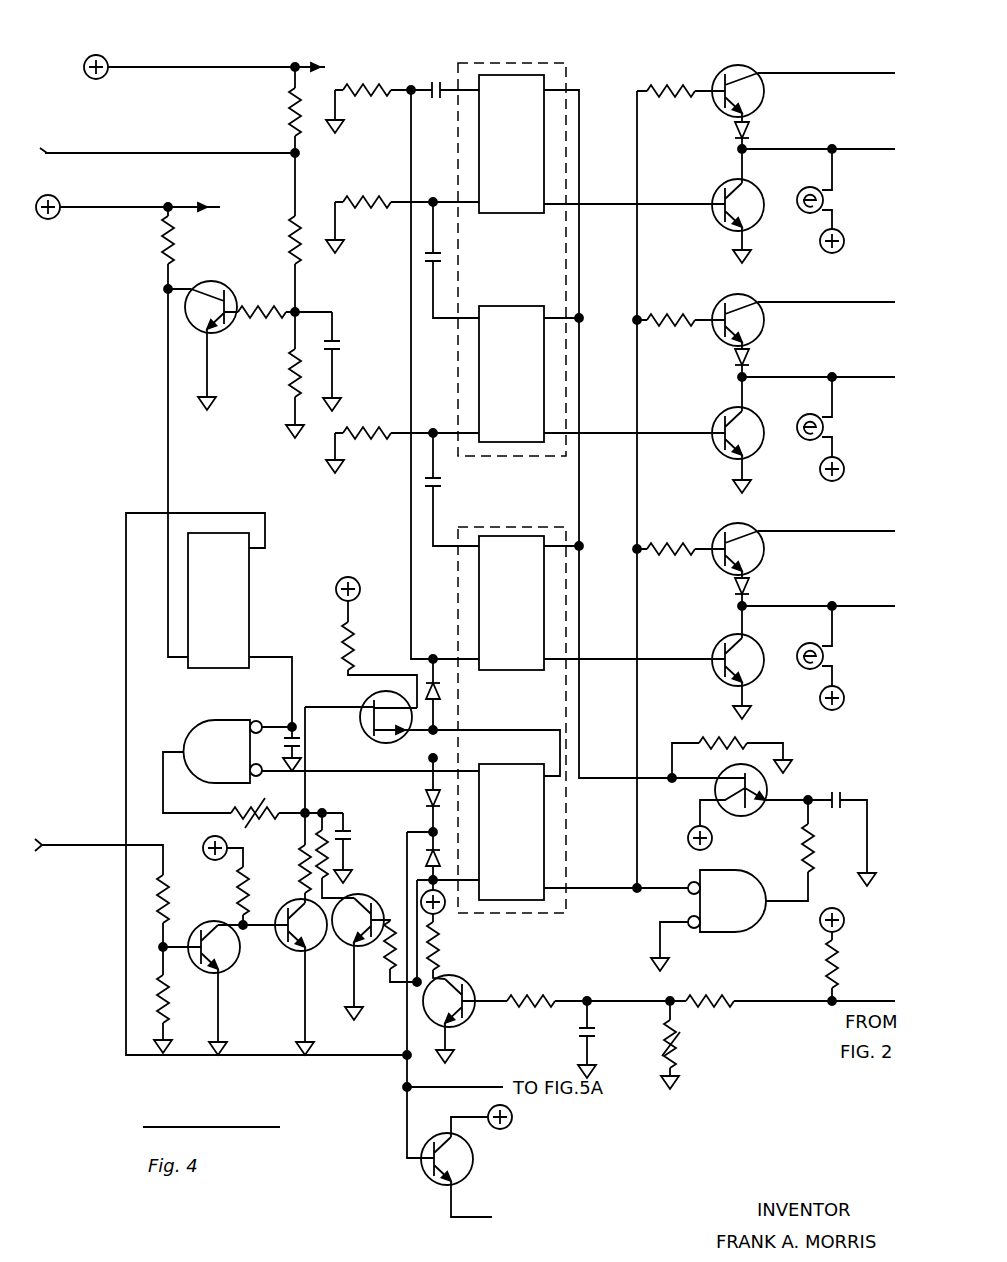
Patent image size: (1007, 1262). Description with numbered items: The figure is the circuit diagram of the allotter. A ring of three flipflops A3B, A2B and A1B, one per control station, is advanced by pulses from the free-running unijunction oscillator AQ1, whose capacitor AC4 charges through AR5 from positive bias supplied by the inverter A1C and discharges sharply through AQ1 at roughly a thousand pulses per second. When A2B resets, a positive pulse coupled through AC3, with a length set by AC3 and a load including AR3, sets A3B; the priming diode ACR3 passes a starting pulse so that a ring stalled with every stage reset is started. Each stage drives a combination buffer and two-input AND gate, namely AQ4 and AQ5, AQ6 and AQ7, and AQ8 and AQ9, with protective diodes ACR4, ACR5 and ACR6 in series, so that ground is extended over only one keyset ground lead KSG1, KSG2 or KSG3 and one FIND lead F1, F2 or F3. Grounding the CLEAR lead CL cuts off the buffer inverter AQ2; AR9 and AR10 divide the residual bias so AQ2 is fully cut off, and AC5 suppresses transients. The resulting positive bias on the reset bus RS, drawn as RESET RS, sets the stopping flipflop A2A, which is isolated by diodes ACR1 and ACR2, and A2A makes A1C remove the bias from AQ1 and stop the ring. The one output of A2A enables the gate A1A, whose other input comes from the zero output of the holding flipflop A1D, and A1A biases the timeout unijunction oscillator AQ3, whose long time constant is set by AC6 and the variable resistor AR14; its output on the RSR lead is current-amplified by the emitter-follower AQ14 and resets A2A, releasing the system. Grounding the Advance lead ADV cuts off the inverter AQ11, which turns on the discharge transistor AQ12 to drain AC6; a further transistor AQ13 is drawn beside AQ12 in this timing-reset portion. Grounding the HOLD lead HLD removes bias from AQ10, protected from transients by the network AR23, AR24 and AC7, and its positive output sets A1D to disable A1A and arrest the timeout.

The unijunction oscillator AQ1 is at (753, 770).
The buffer inverter transistor AQ2 is at (464, 1016).
The unijunction oscillator AQ3 is at (378, 693).
The gate transistor AQ4 is at (734, 67).
The buffer transistor AQ5 is at (745, 183).
The gating transistor AQ6 is at (740, 295).
The gating transistor AQ7 is at (745, 411).
The gating transistor AQ8 is at (740, 525).
The gating transistor AQ9 is at (745, 640).
The hold transistor AQ10 is at (198, 284).
The inverting transistor AQ11 is at (192, 966).
The timing reset transistor AQ12 is at (272, 940).
The transistor AQ13 is at (342, 942).
The emitter-follower AQ14 is at (476, 1158).
The resistor AR3 is at (357, 202).
The charging resistor AR5 is at (812, 852).
The voltage divider resistor AR9 is at (678, 1038).
The voltage divider resistor AR10 is at (708, 1001).
The variable resistor AR14 is at (245, 810).
The protective resistor AR23 is at (290, 375).
The protective resistor AR24 is at (266, 315).
The coupling capacitor AC3 is at (444, 258).
The oscillator capacitor AC4 is at (836, 798).
The transient protection capacitor AC5 is at (588, 1030).
The timing capacitor AC6 is at (344, 834).
The protective capacitor AC7 is at (340, 352).
The isolating diode ACR1 is at (426, 798).
The isolating diode ACR2 is at (440, 854).
The priming diode ACR3 is at (438, 692).
The protective diode ACR4 is at (751, 136).
The protective diode ACR5 is at (753, 362).
The protective diode ACR6 is at (753, 592).
The two-input gate A1A is at (235, 718).
The output inverter A1C is at (771, 932).
The ring flipflop A1B is at (517, 664).
The holding flipflop A1D is at (249, 602).
The stopping flipflop A2A is at (523, 904).
The ring flipflop A2B is at (493, 452).
The ring flipflop A3B is at (488, 213).
The keyset ground lead KSG1 is at (826, 73).
The keyset ground lead KSG2 is at (826, 303).
The keyset ground lead KSG3 is at (826, 531).
The FIND lead F1 is at (880, 151).
The FIND lead F2 is at (883, 378).
The FIND lead F3 is at (880, 607).
The HOLD lead HLD is at (172, 153).
The Advance lead ADV is at (103, 937).
The CLEAR lead CL is at (890, 1002).
The Reset bus RS is at (435, 1103).
The RSR lead RSR is at (456, 1204).
The reset bus RESET RS is at (330, 1058).